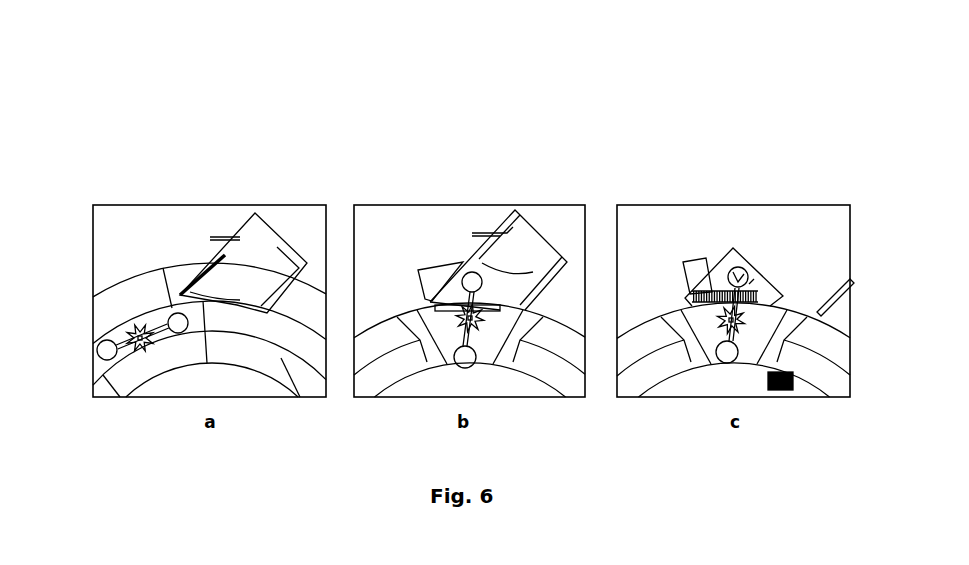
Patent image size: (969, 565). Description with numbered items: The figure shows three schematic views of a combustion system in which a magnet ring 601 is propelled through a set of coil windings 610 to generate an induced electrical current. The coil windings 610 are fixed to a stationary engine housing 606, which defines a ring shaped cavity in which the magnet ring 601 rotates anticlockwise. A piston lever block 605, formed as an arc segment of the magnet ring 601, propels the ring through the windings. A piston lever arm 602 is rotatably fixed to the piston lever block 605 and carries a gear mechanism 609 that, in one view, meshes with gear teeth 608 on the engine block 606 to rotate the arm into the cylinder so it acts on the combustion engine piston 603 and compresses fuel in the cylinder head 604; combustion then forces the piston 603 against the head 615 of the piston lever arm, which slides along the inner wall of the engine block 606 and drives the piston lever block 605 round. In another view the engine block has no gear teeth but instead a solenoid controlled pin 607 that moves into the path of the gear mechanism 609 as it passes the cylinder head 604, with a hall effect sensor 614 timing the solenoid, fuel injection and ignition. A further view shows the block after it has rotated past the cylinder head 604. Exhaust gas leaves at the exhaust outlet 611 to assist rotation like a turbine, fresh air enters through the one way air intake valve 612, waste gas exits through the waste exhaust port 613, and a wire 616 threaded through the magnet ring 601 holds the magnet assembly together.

In FIG. 6a, the magnet ring 601 is at (259, 330).
In FIG. 6c, the piston lever arm 602 is at (723, 323).
In FIG. 6a, the combustion engine piston 603 is at (229, 268).
In FIG. 6a, the cylinder head 604 is at (260, 245).
In FIG. 6a, the piston lever block 605 is at (108, 380).
In FIG. 6b, the engine housing 606 is at (433, 278).
In FIG. 6b, the pin 607 is at (478, 296).
In FIG. 6c, the gear teeth 608 is at (736, 275).
In FIG. 6c, the gear mechanism 609 is at (749, 313).
In FIG. 6a, the coil windings 610 is at (118, 300).
In FIG. 6b, the exhaust outlet 611 is at (548, 285).
In FIG. 6b, the air intake valve 612 is at (472, 232).
In FIG. 6c, the waste exhaust port 613 is at (852, 277).
In FIG. 6c, the hall effect sensor 614 is at (800, 382).
In FIG. 6c, the head of the piston lever arm 615 is at (745, 318).
In FIG. 6a, the wire 616 is at (295, 356).